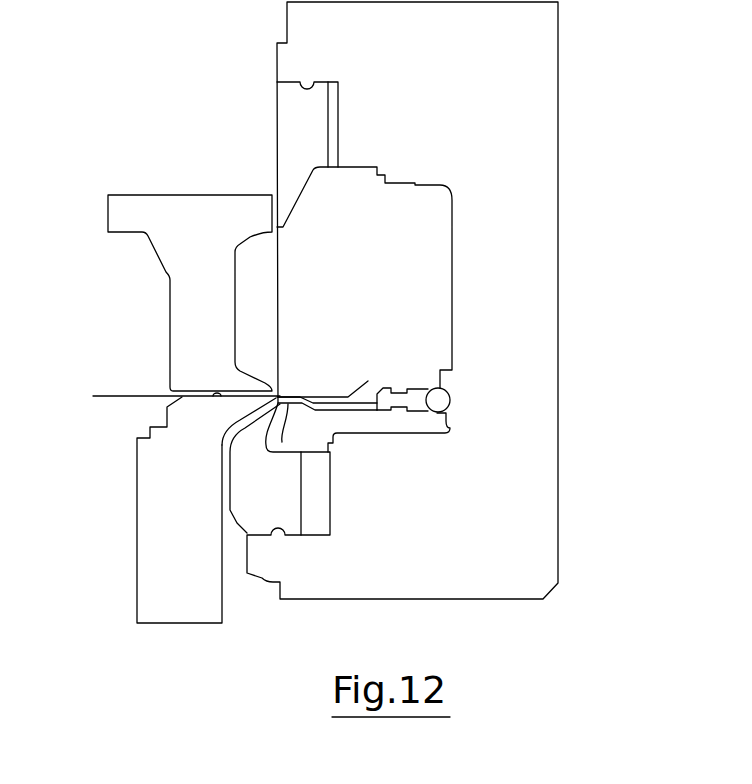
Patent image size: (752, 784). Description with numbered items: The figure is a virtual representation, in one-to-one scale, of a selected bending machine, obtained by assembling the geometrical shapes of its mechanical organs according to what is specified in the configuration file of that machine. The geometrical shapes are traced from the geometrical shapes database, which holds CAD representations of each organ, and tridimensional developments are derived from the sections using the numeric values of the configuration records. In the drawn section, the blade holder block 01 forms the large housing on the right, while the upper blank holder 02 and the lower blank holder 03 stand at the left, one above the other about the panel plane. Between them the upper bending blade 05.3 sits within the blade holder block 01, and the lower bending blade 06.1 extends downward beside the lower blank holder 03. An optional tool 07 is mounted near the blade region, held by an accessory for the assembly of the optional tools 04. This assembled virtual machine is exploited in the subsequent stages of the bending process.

The blade holder block 01 is at (558, 177).
The upper blank holder 02 is at (170, 322).
The lower blank holder 03 is at (135, 545).
The accessory for the assembly of the optional tools 04 is at (416, 389).
The upper bending blade 05.3 is at (277, 128).
The lower bending blade 06.1 is at (237, 525).
The optional tool 07 is at (316, 411).